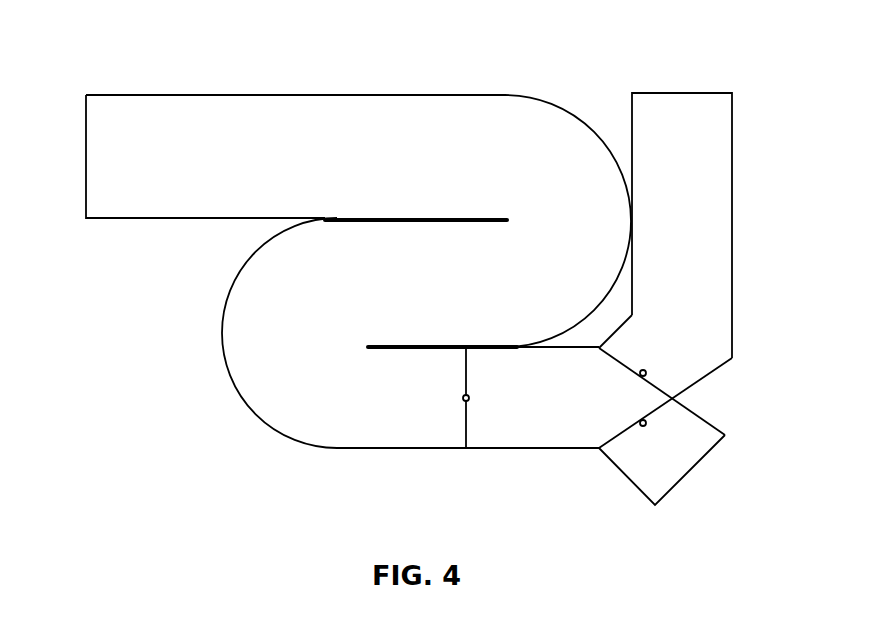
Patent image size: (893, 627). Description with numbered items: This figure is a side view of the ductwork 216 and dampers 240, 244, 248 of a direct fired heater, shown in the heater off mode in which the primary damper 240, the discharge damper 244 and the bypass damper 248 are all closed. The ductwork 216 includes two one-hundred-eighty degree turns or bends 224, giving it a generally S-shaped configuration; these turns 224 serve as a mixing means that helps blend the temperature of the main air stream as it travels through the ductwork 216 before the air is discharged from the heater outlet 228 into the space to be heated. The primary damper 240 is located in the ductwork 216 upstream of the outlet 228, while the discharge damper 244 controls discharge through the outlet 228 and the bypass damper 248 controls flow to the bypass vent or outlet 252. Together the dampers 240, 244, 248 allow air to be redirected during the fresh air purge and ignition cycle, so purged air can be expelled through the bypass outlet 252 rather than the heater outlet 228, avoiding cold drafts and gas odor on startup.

The ductwork 216 is at (150, 94).
The turns or bends 224 is at (567, 105).
The bypass vent or outlet 252 is at (682, 93).
The primary damper 240 is at (464, 428).
The bypass damper 248 is at (657, 373).
The discharge damper 244 is at (668, 415).
The outlet 228 is at (670, 493).